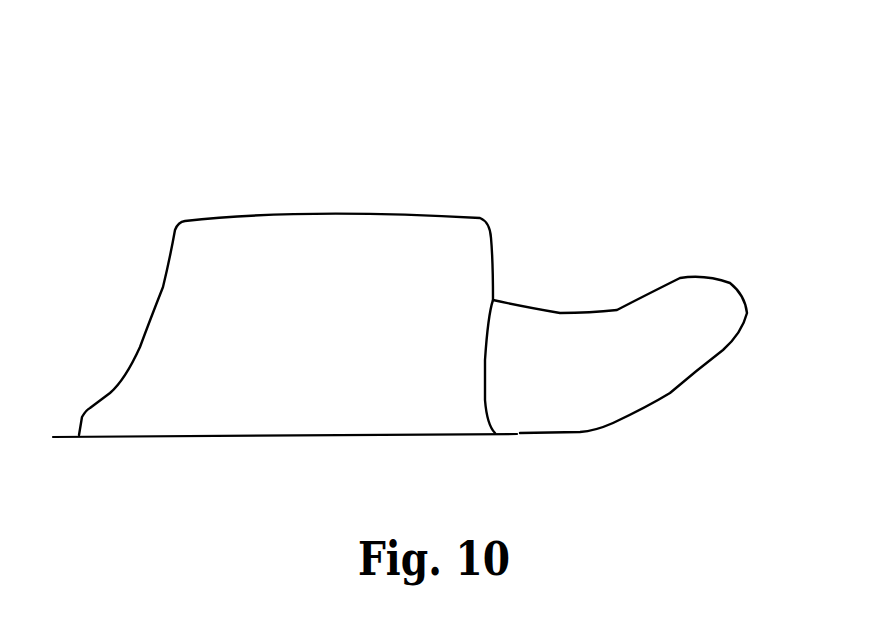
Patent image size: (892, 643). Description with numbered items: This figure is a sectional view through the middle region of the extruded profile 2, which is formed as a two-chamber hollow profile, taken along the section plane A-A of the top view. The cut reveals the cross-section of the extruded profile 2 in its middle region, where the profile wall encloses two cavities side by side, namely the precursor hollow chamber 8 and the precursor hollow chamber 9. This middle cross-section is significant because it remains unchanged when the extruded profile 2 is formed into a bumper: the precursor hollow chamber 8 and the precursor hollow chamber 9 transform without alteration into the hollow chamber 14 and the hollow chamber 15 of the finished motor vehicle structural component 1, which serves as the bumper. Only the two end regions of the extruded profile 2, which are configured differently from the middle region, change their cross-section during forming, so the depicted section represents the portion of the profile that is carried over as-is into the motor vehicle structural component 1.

The motor vehicle structural component 1 is at (451, 246).
The extruded profile 2 is at (472, 25).
The precursor hollow chamber 8 is at (368, 277).
The hollow chamber 14 is at (443, 257).
The precursor hollow chamber 9 is at (658, 380).
The hollow chamber 15 is at (647, 373).